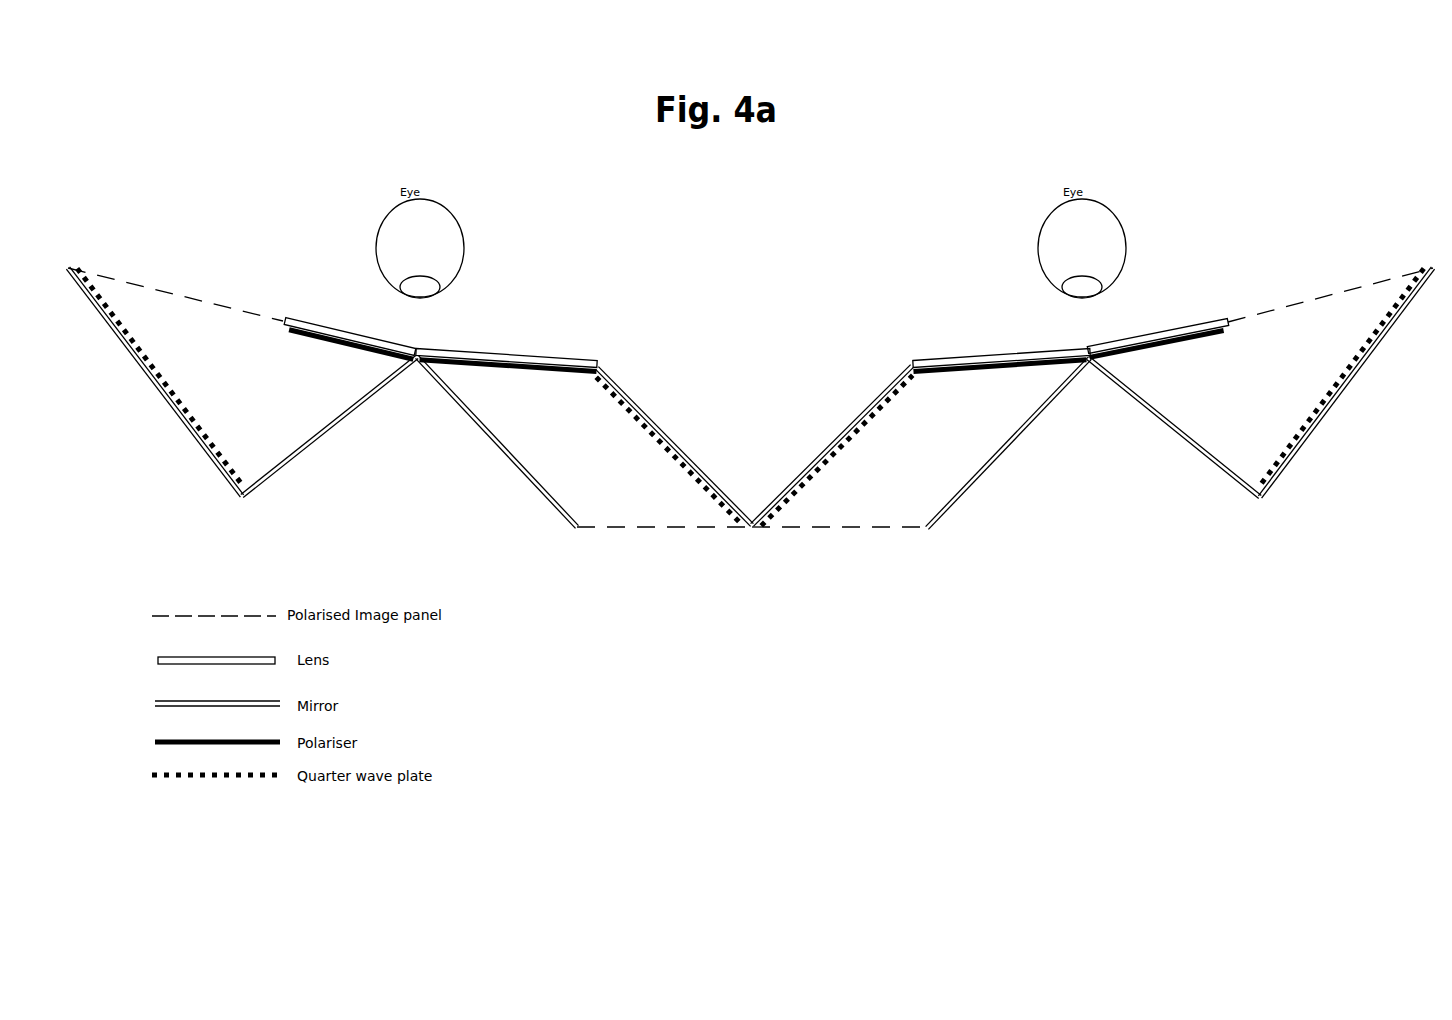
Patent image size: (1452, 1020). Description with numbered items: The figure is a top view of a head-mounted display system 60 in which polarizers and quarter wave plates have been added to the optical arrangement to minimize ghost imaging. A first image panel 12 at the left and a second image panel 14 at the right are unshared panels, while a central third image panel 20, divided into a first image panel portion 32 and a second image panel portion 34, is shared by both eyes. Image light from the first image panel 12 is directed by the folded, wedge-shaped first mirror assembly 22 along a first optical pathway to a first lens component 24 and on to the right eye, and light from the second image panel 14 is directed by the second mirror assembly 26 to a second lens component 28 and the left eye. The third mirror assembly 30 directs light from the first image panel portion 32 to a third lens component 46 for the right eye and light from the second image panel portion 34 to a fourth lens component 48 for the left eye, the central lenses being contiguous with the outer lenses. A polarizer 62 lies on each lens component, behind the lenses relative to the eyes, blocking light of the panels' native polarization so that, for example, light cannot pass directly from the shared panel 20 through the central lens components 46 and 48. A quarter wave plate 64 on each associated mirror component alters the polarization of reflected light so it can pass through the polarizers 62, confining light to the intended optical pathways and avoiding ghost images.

The first image panel 12 is at (227, 312).
The second image panel 14 is at (1273, 305).
The third image panel 20 is at (760, 547).
The first mirror assembly 22 is at (312, 478).
The first lens component 24 is at (312, 325).
The second mirror assembly 26 is at (1294, 492).
The second lens component 28 is at (1167, 333).
The third mirror assembly 30 is at (518, 488).
The first image panel portion 32 is at (633, 528).
The second image panel portion 34 is at (880, 528).
The third lens component 46 is at (547, 360).
The fourth lens component 48 is at (930, 360).
The head-mounted display system 60 is at (756, 297).
The polarizer 62 is at (348, 345).
The quarter wave plate 64 is at (663, 447).